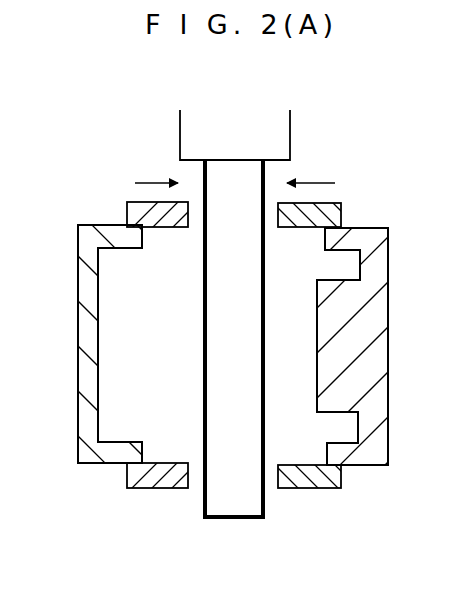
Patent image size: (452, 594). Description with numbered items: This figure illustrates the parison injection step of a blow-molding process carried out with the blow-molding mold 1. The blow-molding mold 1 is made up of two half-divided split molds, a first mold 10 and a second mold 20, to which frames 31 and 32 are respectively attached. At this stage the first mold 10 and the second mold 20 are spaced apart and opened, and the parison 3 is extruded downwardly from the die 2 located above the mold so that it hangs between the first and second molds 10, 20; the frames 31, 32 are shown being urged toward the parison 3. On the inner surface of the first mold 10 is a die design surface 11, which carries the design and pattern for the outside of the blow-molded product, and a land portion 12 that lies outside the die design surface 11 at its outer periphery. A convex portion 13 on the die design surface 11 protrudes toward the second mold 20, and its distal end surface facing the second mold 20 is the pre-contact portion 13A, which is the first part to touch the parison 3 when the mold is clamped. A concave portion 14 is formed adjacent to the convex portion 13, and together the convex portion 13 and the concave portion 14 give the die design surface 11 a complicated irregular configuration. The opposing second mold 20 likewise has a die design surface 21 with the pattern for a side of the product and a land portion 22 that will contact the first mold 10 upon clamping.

The blow-molding mold 1 is at (334, 96).
The die 2 is at (282, 135).
The parison 3 is at (233, 519).
The first mold 10 is at (363, 365).
The die design surface 11 is at (300, 350).
The land portion 12 is at (330, 240).
The convex portion 13 is at (328, 400).
The pre-contact portion 13A is at (317, 313).
The concave portion 14 is at (359, 266).
The second mold 20 is at (113, 358).
The die design surface 21 is at (99, 371).
The land portion 22 is at (140, 241).
The frame 31 is at (338, 212).
The frame 32 is at (128, 212).